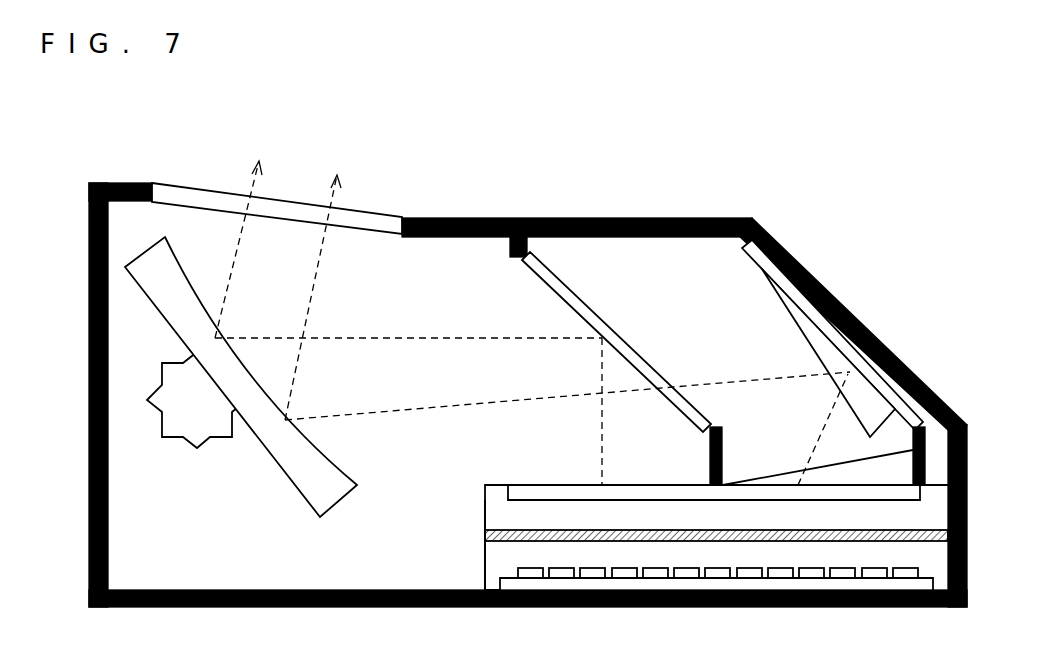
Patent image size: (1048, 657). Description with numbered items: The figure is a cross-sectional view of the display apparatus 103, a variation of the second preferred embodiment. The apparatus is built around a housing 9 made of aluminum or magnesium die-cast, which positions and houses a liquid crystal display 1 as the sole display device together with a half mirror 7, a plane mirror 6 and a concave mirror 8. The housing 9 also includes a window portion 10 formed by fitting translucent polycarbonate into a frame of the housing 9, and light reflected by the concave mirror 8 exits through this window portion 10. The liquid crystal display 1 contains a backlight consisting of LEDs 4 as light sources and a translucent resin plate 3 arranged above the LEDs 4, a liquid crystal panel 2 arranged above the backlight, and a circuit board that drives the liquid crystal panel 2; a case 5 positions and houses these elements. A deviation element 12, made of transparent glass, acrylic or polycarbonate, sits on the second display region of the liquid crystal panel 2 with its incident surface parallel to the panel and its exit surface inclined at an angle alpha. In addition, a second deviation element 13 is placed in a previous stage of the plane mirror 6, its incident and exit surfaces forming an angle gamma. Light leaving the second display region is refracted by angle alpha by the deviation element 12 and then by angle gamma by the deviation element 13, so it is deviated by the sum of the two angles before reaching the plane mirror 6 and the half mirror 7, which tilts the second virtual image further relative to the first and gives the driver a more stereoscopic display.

The display apparatus 103 is at (123, 126).
The liquid crystal display 1 is at (937, 514).
The liquid crystal panel 2 is at (910, 497).
The translucent resin plate 3 is at (966, 540).
The LEDs 4 is at (920, 570).
The case 5 is at (485, 556).
The plane mirror 6 is at (817, 320).
The half mirror 7 is at (560, 288).
The concave mirror 8 is at (311, 487).
The housing 9 is at (88, 400).
The window portion 10 is at (217, 200).
The deviation element 12 is at (895, 465).
The deviation element 13 is at (873, 428).